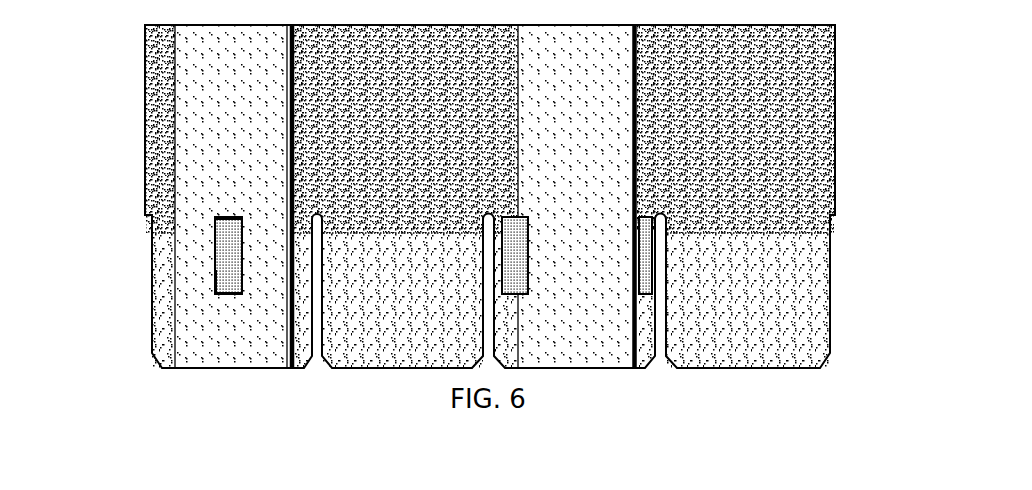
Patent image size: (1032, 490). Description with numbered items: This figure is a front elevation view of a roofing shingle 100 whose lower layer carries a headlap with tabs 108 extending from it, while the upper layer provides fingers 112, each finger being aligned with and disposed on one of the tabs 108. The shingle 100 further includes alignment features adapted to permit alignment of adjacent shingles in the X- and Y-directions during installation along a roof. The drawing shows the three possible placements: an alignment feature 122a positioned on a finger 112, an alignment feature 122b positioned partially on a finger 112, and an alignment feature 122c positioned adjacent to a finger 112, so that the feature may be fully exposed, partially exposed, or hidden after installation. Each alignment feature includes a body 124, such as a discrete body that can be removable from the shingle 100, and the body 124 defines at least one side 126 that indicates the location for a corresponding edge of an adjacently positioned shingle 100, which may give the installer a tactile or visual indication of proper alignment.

The roofing shingle 100 is at (108, 58).
The tab 108 is at (415, 317).
The finger 112 is at (250, 122).
The alignment feature positioned on a finger 122a is at (215, 274).
The alignment feature positioned partially on a finger 122b is at (528, 290).
The alignment feature positioned adjacent to a finger 122c is at (653, 288).
The body 124 is at (228, 282).
The side 126 is at (227, 208).